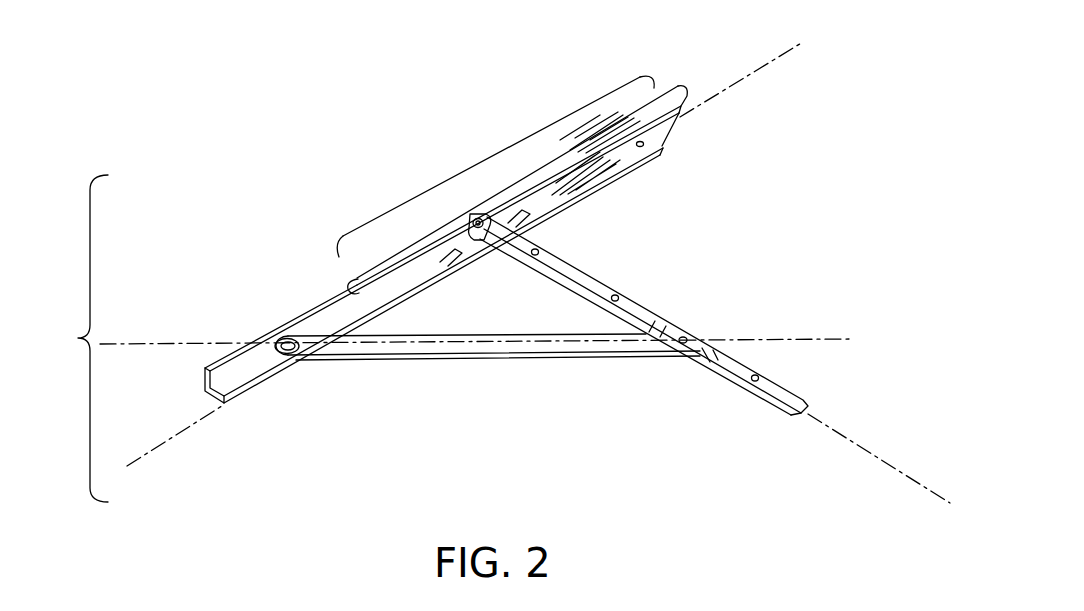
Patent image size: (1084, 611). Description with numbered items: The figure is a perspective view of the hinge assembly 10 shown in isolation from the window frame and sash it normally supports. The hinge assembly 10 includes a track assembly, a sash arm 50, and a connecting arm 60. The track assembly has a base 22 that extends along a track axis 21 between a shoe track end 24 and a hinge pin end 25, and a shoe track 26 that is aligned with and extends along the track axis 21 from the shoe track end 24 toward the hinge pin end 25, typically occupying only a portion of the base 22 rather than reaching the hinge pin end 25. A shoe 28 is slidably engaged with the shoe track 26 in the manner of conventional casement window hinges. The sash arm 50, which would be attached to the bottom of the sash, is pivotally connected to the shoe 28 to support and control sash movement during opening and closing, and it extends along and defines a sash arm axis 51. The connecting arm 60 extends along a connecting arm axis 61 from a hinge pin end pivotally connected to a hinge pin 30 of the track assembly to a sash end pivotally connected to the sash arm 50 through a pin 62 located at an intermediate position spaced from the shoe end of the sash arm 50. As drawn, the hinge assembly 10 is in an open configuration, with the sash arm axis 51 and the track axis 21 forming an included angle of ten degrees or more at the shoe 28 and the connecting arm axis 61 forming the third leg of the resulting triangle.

The hinge assembly 10 is at (73, 338).
The track axis 21 is at (799, 48).
The base 22 is at (679, 131).
The shoe track end 24 is at (683, 108).
The hinge pin end 25 is at (223, 408).
The shoe track 26 is at (480, 157).
The shoe 28 is at (470, 253).
The hinge pin 30 is at (284, 339).
The sash arm 50 is at (637, 298).
The sash arm axis 51 is at (930, 492).
The connecting arm 60 is at (511, 360).
The connecting arm axis 61 is at (165, 343).
The pin 62 is at (685, 332).